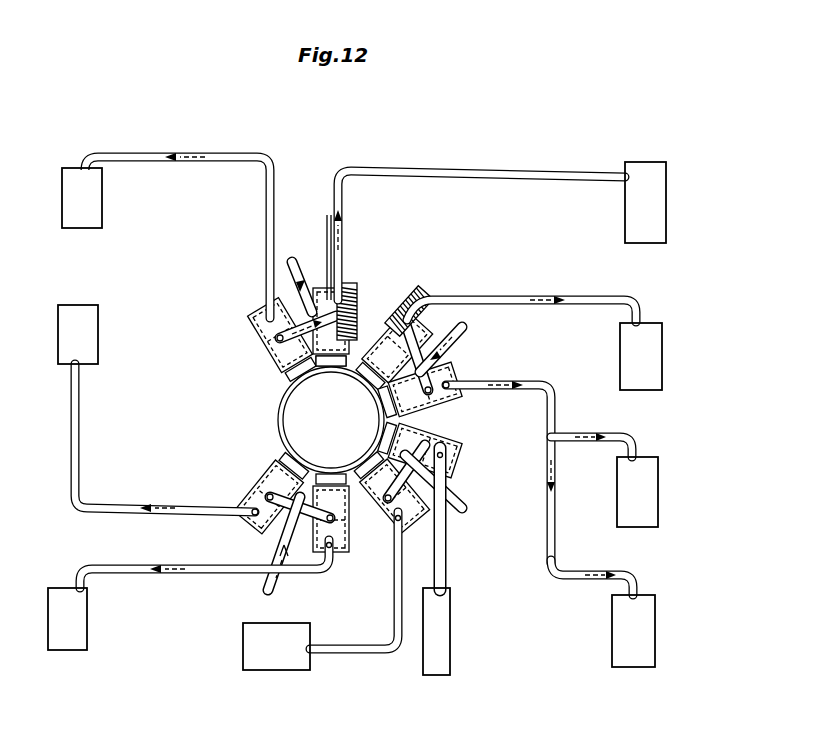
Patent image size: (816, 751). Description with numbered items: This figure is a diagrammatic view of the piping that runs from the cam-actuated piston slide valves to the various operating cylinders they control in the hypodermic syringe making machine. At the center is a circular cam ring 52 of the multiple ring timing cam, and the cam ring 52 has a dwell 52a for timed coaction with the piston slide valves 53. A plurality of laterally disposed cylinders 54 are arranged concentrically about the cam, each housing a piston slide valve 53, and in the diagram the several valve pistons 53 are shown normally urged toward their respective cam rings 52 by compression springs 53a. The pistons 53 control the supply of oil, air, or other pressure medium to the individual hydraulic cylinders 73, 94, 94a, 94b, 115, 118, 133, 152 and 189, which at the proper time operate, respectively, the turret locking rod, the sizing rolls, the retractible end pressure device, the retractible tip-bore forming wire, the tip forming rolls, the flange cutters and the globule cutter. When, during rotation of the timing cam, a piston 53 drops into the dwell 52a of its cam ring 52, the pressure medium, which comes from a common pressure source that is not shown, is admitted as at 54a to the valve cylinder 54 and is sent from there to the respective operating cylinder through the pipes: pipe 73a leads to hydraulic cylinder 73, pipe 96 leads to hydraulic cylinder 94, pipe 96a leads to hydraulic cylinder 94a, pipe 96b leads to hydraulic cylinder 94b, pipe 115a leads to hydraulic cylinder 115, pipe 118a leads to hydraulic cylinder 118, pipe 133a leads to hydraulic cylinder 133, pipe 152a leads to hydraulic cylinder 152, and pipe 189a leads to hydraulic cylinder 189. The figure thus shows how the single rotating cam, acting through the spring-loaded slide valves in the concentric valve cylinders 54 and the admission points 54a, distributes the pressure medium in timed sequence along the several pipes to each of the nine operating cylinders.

The cam ring 52 is at (279, 418).
The dwell 52a is at (339, 370).
The piston slide valve 53 is at (383, 335).
The compression spring 53a is at (352, 292).
The cylinder 54 is at (330, 236).
The pressure medium inlet 54a is at (318, 285).
The hydraulic cylinder 73 is at (663, 212).
The pipe 73a is at (486, 173).
The hydraulic cylinder 94 is at (662, 358).
The hydraulic cylinder 94a is at (659, 500).
The hydraulic cylinder 94b is at (657, 638).
The pipe 96 is at (546, 296).
The pipe 96a is at (594, 460).
The pipe 96b is at (583, 566).
The hydraulic cylinder 115 is at (103, 212).
The pipe 115a is at (220, 160).
The hydraulic cylinder 118 is at (99, 347).
The pipe 118a is at (120, 500).
The hydraulic cylinder 133 is at (88, 632).
The pipe 133a is at (186, 580).
The hydraulic cylinder 152 is at (278, 668).
The pipe 152a is at (394, 605).
The hydraulic cylinder 189 is at (451, 649).
The pipe 189a is at (447, 555).